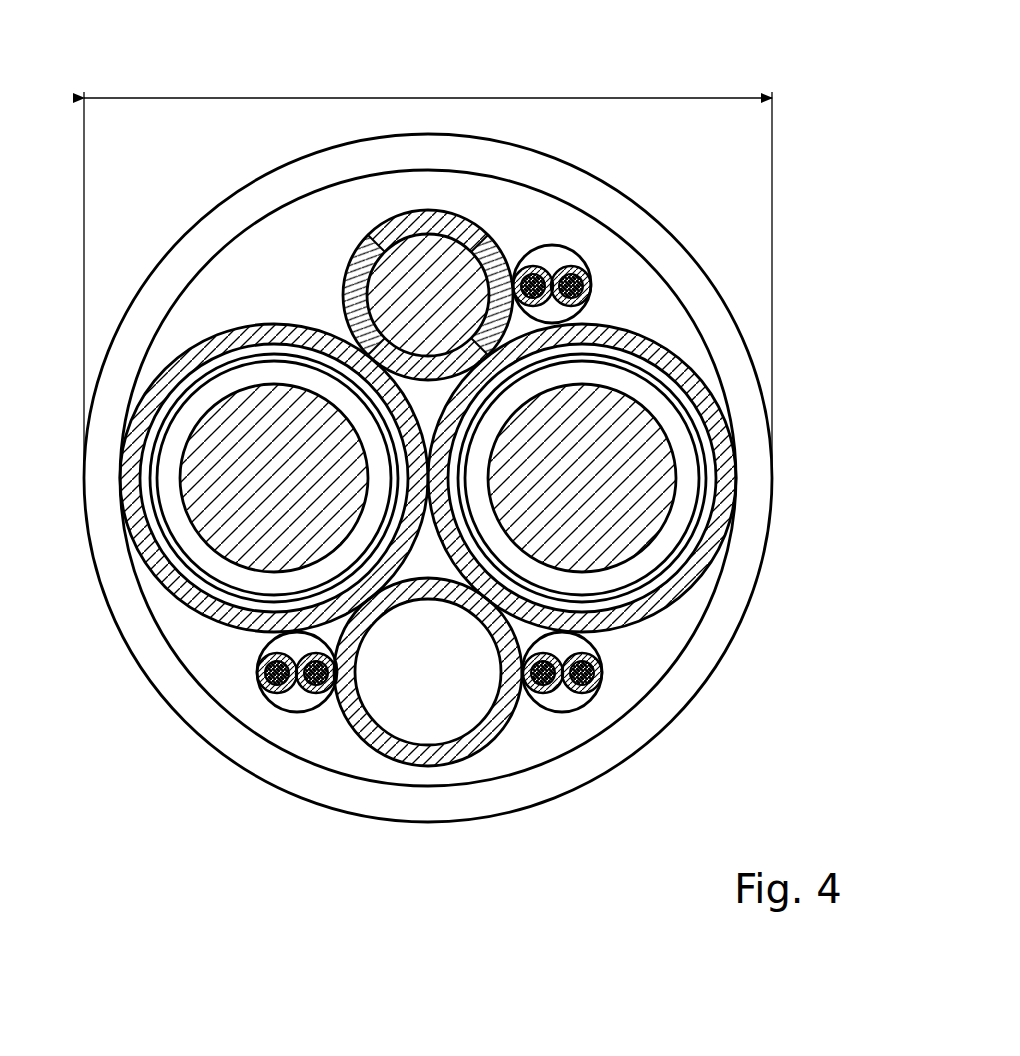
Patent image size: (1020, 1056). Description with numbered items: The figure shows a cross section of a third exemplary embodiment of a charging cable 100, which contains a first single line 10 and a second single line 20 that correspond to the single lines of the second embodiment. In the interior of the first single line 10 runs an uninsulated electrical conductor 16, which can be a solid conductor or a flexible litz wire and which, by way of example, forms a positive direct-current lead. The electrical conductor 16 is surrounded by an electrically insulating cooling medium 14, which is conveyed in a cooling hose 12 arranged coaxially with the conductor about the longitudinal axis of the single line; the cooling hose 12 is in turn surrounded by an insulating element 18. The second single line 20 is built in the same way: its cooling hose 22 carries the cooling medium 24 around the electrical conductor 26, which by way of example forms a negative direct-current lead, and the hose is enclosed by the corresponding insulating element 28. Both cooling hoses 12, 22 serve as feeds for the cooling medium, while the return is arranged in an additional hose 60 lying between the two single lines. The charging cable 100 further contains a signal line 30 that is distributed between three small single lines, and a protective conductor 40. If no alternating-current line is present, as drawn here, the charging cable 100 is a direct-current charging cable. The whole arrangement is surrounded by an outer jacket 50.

The charging cable 100 is at (684, 64).
The first single line 10 is at (229, 396).
The cooling hose 12 is at (153, 507).
The cooling medium 14 is at (197, 547).
The electrical conductor 16 is at (207, 445).
The insulating element 18 is at (185, 592).
The second single line 20 is at (629, 543).
The cooling hose 22 is at (687, 545).
The cooling medium 24 is at (687, 470).
The electrical conductor 26 is at (613, 513).
The insulation sheath of second core 28 is at (672, 587).
The signal line 30 is at (590, 283).
The protective conductor 40 is at (343, 290).
The outer jacket 50 is at (208, 732).
The additional hose 60 is at (433, 718).